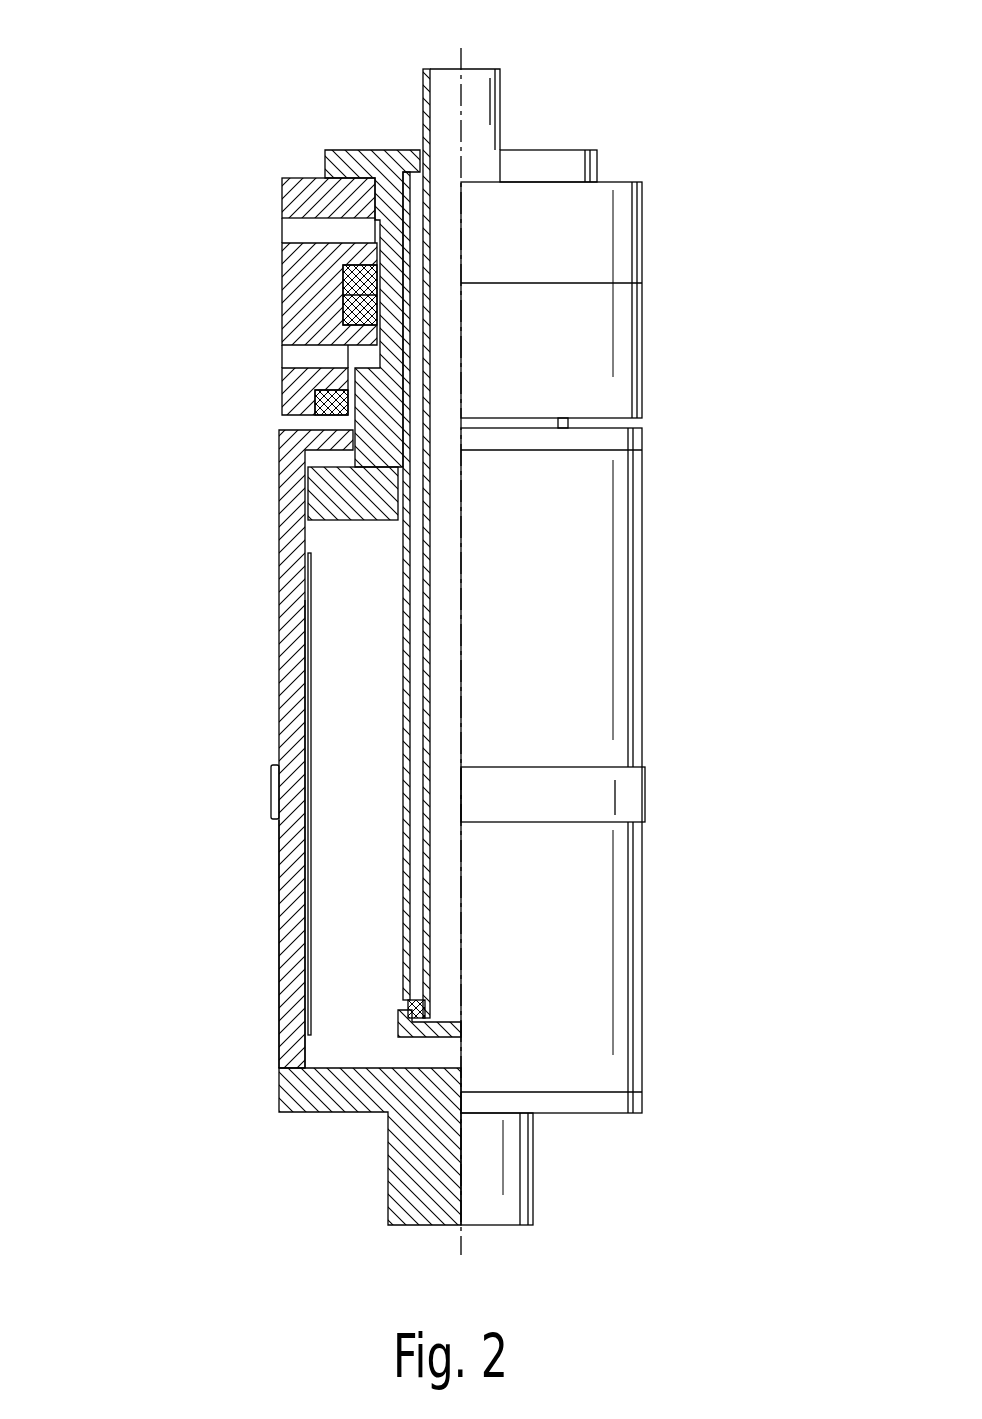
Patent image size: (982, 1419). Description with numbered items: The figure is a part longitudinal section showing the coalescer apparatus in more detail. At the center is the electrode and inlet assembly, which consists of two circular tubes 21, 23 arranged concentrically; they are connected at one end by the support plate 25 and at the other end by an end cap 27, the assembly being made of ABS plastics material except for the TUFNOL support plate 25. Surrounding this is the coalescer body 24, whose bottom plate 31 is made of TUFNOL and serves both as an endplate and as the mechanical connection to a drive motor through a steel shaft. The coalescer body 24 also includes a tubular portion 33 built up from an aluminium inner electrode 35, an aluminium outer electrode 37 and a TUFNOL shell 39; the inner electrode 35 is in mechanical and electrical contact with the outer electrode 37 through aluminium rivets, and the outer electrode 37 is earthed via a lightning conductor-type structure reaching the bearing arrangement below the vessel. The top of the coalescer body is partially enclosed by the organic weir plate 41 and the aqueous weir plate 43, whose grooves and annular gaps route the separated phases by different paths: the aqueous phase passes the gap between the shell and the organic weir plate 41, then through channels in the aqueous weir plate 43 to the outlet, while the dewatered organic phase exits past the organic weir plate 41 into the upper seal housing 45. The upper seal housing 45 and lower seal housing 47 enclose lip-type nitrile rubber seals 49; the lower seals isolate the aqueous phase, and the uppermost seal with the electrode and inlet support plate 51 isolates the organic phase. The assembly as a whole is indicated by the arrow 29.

The circular tube 21 is at (432, 628).
The circular tube 23 is at (410, 702).
The coalescer body 24 is at (290, 580).
The support plate 25 is at (368, 155).
The end cap 27 is at (400, 1008).
The base plate 29 is at (220, 1092).
The bottom plate 31 is at (525, 1170).
The tubular portion 33 is at (292, 718).
The inner electrode 35 is at (302, 656).
The outer electrode 37 is at (630, 790).
The shell 39 is at (292, 905).
The organic weir plate 41 is at (328, 496).
The aqueous weir plate 43 is at (635, 437).
The upper seal housing 45 is at (288, 198).
The lower seal housing 47 is at (622, 342).
The seals 49 is at (315, 400).
The electrode and inlet support plate 51 is at (598, 157).